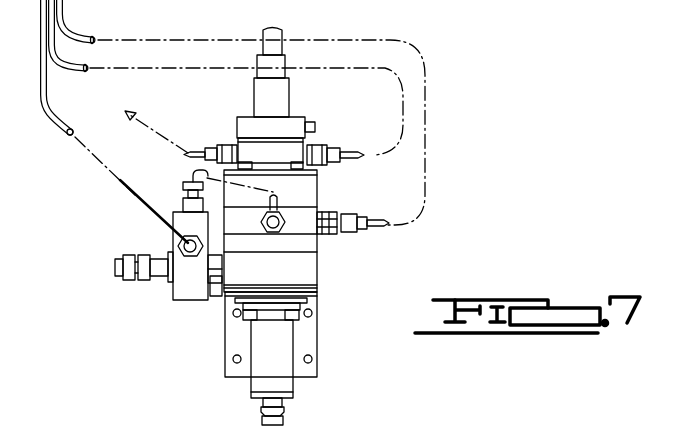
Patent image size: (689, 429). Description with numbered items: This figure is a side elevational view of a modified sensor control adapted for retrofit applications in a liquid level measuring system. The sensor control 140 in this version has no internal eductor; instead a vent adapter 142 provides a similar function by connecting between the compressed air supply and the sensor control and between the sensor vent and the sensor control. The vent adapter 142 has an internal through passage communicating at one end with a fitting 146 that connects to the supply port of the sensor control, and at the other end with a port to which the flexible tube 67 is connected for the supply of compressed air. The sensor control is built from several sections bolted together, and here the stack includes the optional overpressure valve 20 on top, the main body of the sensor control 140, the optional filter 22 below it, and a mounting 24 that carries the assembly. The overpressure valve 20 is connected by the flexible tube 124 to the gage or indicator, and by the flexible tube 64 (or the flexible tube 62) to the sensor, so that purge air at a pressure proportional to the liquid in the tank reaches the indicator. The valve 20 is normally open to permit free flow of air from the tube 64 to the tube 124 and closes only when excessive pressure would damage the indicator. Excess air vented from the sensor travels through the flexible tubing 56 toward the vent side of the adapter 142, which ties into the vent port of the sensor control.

The overpressure valve 20 is at (277, 95).
The filter 22 is at (265, 377).
The mounting 24 is at (312, 341).
The flexible tubing 56 is at (150, 208).
The flexible tube 62 is at (372, 228).
The flexible tube 64 is at (348, 158).
The flexible tube 67 is at (115, 265).
The flexible tube 124 is at (192, 151).
The sensor control 140 is at (323, 260).
The vent adapter 142 is at (188, 288).
The fitting 146 is at (220, 297).